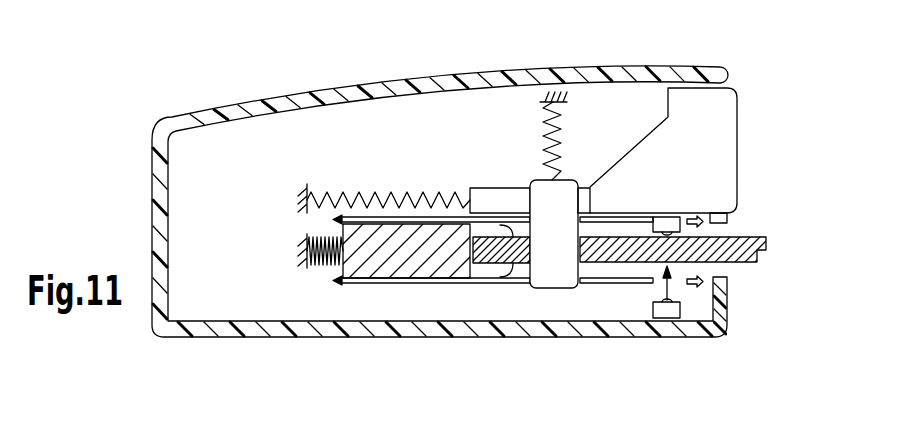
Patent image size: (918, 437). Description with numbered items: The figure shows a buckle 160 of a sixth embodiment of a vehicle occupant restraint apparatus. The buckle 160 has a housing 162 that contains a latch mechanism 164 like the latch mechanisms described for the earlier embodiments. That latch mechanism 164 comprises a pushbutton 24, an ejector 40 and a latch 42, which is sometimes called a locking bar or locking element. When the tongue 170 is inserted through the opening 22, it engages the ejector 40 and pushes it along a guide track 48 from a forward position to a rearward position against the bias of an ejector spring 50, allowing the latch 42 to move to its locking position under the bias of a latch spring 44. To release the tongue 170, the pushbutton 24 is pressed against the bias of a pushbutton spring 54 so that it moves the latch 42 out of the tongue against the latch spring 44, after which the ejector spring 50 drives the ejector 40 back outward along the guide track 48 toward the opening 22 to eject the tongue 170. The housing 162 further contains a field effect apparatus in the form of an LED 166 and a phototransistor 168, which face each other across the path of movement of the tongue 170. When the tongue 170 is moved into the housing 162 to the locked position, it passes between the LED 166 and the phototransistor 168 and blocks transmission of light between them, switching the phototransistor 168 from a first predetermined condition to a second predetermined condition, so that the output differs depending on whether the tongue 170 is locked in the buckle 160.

The buckle 160 is at (172, 86).
The housing 162 is at (343, 97).
The pushbutton spring 54 is at (318, 193).
The latch mechanism 164 is at (266, 184).
The ejector spring 50 is at (324, 267).
The latch spring 44 is at (542, 117).
The latch 42 is at (560, 192).
The pushbutton 24 is at (737, 147).
The phototransistor 168 is at (670, 214).
The opening 22 is at (745, 220).
The tongue 170 is at (736, 248).
The guide track 48 is at (398, 287).
The ejector 40 is at (452, 264).
The LED 166 is at (663, 318).